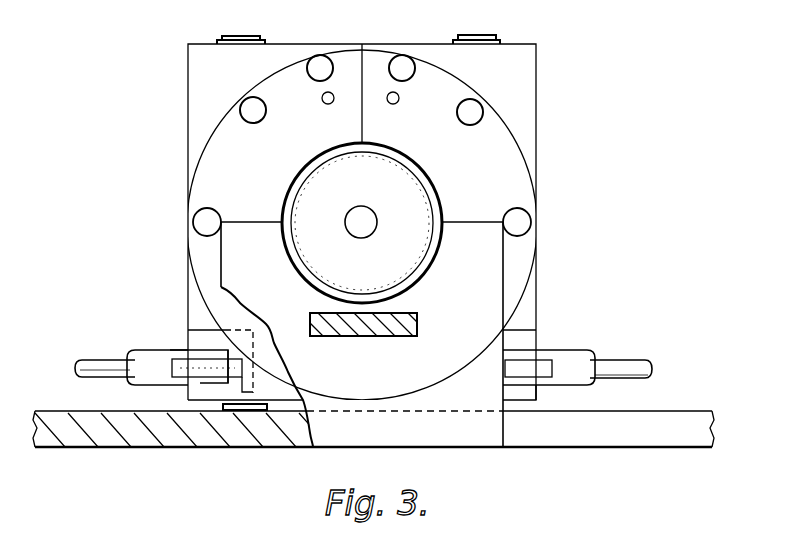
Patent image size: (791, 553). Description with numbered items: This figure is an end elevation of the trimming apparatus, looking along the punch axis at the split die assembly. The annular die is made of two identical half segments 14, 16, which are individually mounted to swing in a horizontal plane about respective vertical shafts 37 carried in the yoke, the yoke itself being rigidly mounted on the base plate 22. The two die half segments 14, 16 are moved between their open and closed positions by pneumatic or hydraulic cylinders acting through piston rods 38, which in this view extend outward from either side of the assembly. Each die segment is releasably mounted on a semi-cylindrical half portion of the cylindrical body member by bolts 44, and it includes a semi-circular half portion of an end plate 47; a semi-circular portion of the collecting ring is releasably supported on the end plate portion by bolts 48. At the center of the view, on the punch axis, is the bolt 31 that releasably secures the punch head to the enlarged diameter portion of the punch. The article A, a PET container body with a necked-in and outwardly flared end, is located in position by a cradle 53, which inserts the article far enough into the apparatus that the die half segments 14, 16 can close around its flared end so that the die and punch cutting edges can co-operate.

The die half segment 14 is at (200, 152).
The die half segment 16 is at (525, 160).
The base plate 22 is at (76, 411).
The bolt 31 is at (364, 227).
The vertical shaft 37 is at (235, 36).
The piston rod 38 is at (107, 364).
The bolt 44 is at (206, 218).
The end plate 47 is at (373, 63).
The bolt 48 is at (236, 219).
The cradle 53 is at (504, 268).
The article A is at (283, 237).